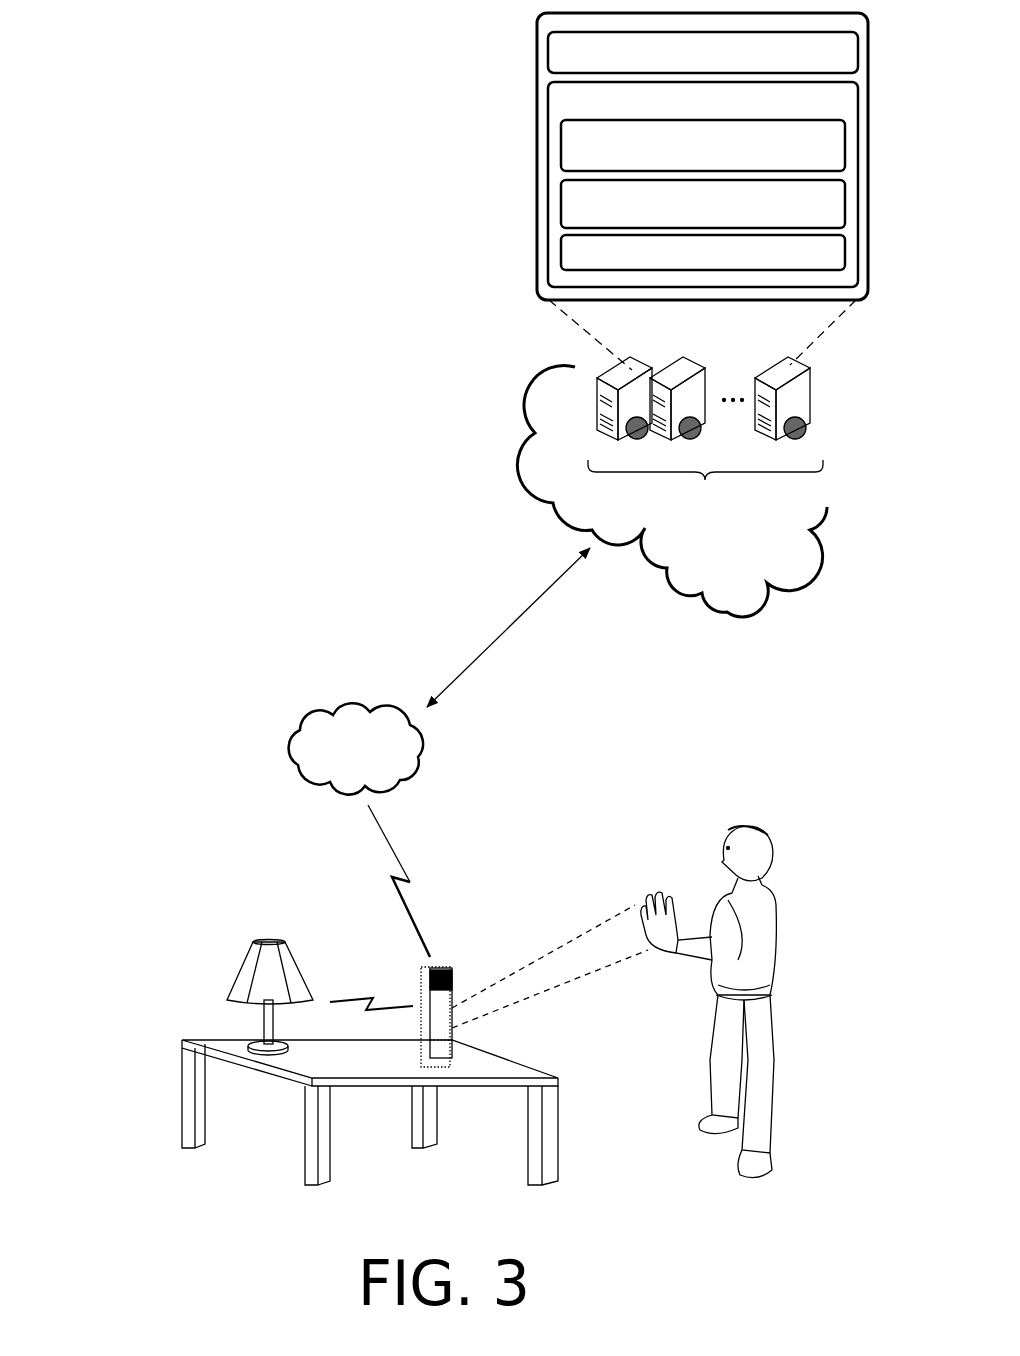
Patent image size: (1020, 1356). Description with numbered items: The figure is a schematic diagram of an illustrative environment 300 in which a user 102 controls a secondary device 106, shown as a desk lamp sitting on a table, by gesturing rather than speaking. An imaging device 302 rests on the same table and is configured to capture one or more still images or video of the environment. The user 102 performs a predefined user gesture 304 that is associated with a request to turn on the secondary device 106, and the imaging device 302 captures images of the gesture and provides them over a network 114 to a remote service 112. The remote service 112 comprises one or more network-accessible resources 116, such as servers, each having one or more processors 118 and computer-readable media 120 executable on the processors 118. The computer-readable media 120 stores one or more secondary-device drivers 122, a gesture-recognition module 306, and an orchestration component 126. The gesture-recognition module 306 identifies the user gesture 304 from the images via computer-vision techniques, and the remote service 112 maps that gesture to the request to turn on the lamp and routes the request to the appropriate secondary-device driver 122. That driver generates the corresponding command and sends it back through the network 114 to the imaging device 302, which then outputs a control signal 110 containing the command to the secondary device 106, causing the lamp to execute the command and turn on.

The user 102 is at (772, 1184).
The secondary device 106 is at (227, 1003).
The control signal 110 is at (368, 958).
The remote service 112 is at (517, 388).
The network 114 is at (356, 748).
The network-accessible resources 116 is at (705, 441).
The processors 118 is at (703, 52).
The computer-readable media 120 is at (703, 184).
The secondary-device drivers 122 is at (703, 145).
The orchestration component 126 is at (703, 252).
The environment 300 is at (138, 745).
The imaging device 302 is at (450, 957).
The user gesture 304 is at (633, 873).
The gesture-recognition module 306 is at (703, 204).